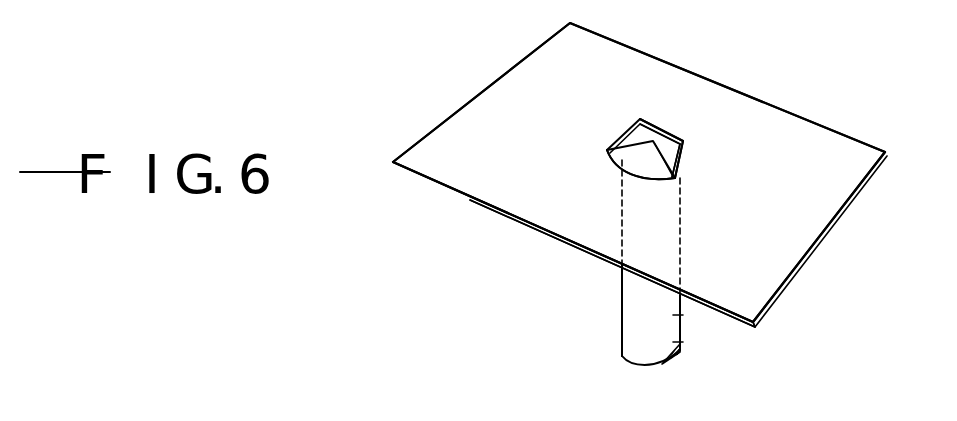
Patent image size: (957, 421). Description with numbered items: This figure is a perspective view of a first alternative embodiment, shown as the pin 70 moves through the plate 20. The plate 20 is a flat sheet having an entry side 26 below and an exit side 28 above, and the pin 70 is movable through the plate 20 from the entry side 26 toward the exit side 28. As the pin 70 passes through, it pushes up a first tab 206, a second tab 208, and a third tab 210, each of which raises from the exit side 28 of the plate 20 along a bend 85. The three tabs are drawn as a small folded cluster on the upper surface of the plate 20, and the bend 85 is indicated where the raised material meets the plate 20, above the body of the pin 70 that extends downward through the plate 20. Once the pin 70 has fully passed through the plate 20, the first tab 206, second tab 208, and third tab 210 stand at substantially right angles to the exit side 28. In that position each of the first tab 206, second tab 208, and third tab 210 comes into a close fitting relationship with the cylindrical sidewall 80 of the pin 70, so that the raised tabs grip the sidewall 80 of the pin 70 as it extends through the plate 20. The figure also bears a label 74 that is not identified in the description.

The plate 20 is at (581, 78).
The entry side 26 is at (460, 190).
The exit side 28 is at (832, 142).
The tab 74 is at (628, 130).
The first tab 206 is at (627, 160).
The second tab 208 is at (662, 120).
The third tab 210 is at (690, 155).
The bend 85 is at (640, 173).
The pin 70 is at (684, 318).
The cylindrical sidewall 80 is at (680, 346).